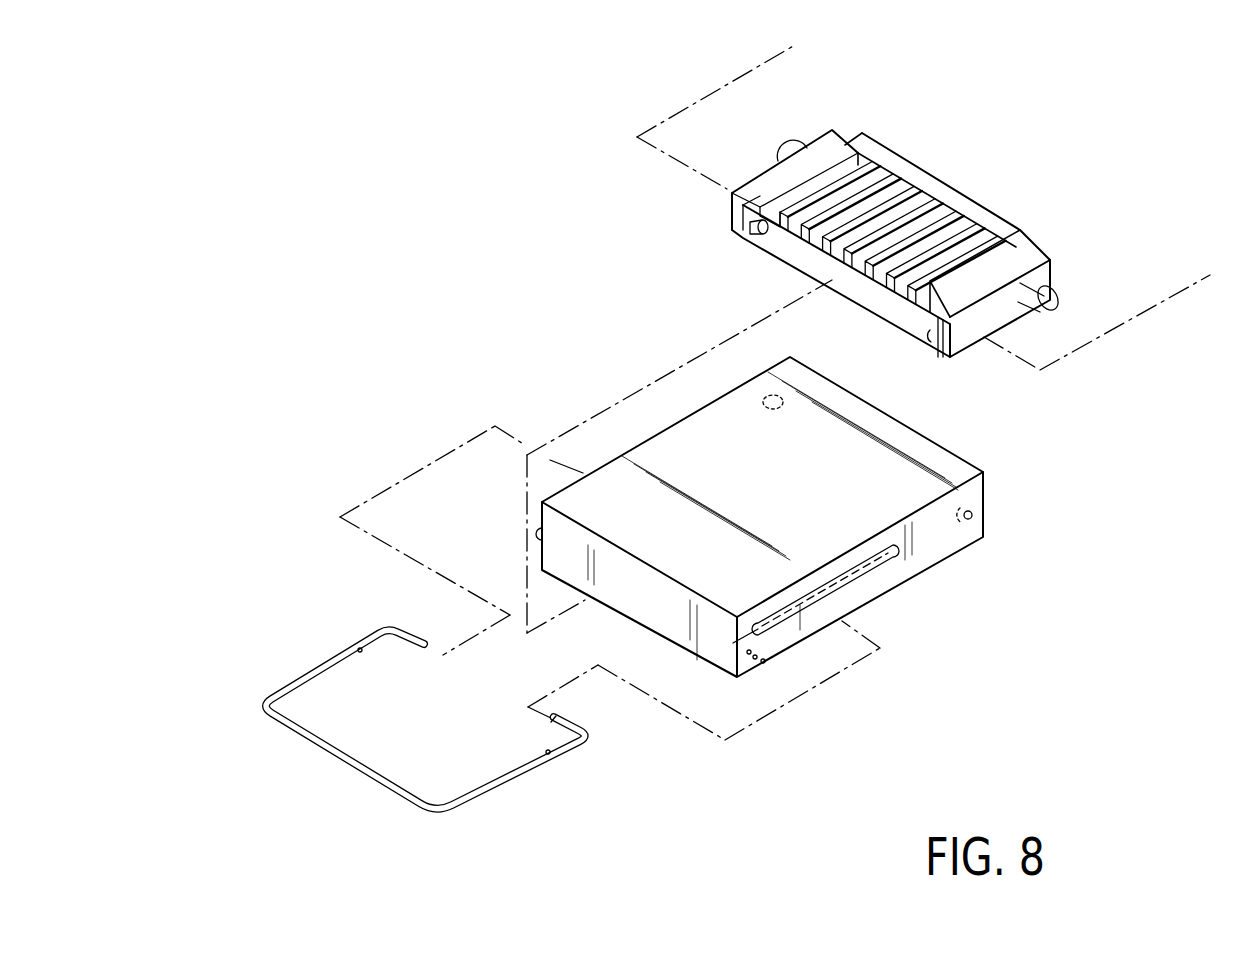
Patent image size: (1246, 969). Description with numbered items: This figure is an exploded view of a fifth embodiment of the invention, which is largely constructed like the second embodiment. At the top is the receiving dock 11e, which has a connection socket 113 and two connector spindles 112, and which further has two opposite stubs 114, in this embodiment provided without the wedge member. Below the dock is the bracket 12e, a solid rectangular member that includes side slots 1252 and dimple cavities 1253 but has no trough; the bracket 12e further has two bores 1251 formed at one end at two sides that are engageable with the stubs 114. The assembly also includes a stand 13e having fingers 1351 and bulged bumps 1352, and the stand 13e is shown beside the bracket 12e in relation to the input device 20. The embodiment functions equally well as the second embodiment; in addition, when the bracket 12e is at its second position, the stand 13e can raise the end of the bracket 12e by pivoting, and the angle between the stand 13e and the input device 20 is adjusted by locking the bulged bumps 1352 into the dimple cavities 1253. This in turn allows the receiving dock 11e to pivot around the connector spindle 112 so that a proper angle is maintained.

The receiving dock 11e is at (917, 198).
The connector spindles 112 is at (797, 145).
The connection socket 113 is at (783, 215).
The stubs 114 is at (748, 235).
The input device 20 is at (1130, 300).
The bracket 12e is at (841, 586).
The bores 1251 is at (988, 492).
The side slots 1252 is at (870, 570).
The dimple cavities 1253 is at (749, 654).
The stand 13e is at (456, 701).
The fingers 1351 is at (572, 723).
The bulged bumps 1352 is at (550, 754).